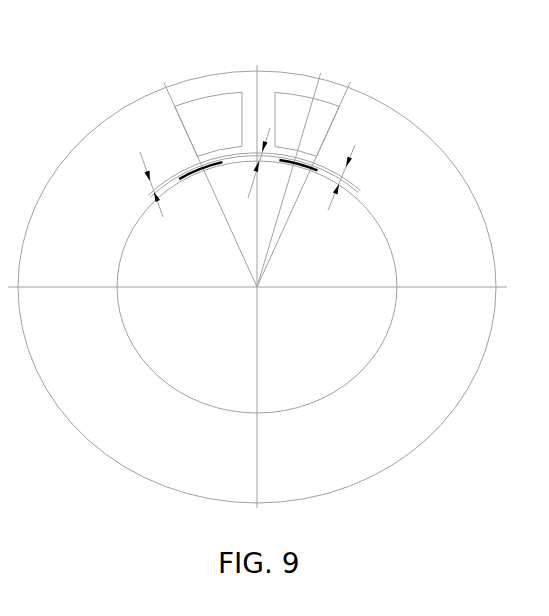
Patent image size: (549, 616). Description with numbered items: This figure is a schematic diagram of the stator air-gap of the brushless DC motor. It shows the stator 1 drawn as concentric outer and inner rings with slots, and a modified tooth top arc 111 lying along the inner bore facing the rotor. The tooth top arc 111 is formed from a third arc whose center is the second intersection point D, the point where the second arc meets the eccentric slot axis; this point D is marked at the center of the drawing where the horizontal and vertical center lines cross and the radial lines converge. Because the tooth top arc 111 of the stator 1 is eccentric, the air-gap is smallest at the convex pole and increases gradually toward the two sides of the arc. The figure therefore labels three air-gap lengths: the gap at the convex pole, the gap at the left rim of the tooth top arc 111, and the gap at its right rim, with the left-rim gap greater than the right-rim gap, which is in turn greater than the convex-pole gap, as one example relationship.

The stator 1 is at (263, 98).
The stator tooth top arc 111 is at (220, 160).
The second intersection point D is at (257, 286).